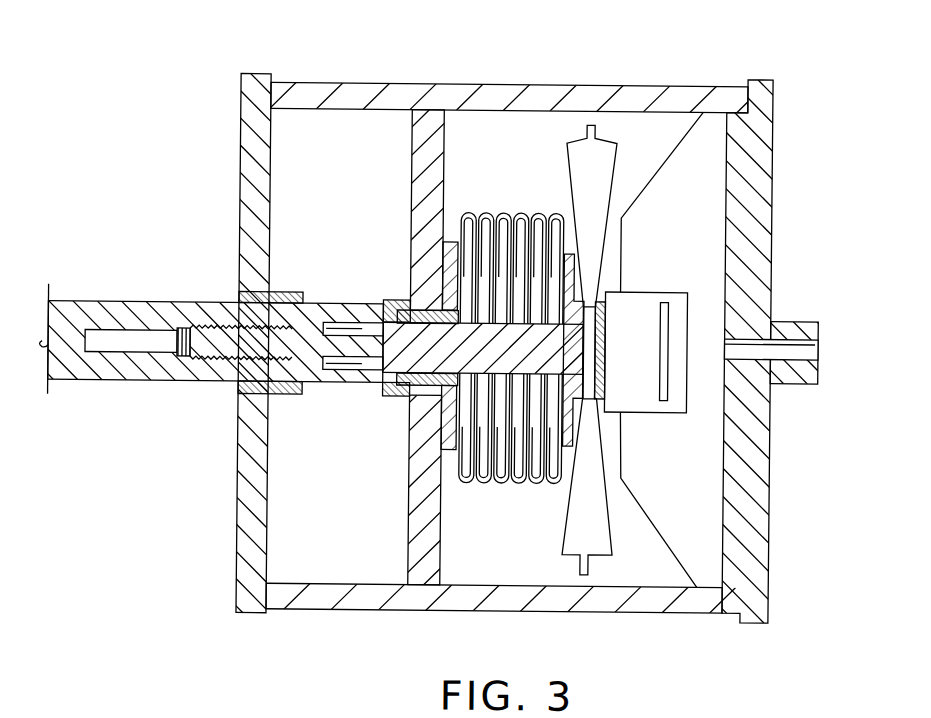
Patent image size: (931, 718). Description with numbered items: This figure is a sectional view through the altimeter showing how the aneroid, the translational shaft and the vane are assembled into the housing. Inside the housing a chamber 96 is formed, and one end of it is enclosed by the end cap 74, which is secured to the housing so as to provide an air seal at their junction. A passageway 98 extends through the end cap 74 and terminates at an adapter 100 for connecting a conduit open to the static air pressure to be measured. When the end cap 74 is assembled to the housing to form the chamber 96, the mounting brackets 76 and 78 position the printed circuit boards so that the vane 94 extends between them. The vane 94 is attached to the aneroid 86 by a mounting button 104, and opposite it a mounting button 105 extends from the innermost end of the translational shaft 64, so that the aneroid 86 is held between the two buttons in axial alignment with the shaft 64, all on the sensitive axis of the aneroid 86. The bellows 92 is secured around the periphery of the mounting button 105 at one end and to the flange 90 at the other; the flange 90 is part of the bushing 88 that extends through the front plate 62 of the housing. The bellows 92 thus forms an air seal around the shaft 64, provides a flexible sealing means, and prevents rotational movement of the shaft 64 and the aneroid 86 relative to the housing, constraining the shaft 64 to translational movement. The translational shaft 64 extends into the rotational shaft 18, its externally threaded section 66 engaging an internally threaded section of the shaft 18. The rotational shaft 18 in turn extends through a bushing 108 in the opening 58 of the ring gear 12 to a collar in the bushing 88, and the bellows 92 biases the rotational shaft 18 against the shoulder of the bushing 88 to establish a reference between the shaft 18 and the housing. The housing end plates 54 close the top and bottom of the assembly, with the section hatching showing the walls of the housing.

The ring gear 12 is at (238, 471).
The rotational shaft 18 is at (119, 379).
The housing end plates 54 is at (358, 91).
The opening 58 is at (233, 321).
The front plate 62 is at (417, 179).
The translational shaft 64 is at (399, 387).
The externally threaded section 66 is at (212, 328).
The end cap 74 is at (761, 202).
The mounting bracket 76 is at (693, 211).
The mounting bracket 78 is at (691, 497).
The aneroid 86 is at (599, 164).
The bushing 88 is at (399, 304).
The flange 90 is at (448, 451).
The bellows 92 is at (514, 484).
The vane 94 is at (648, 399).
The chamber 96 is at (503, 159).
The passageway 98 is at (790, 347).
The adapter 100 is at (818, 315).
The mounting button 104 is at (598, 300).
The mounting button 105 is at (572, 261).
The bushing 108 is at (289, 294).